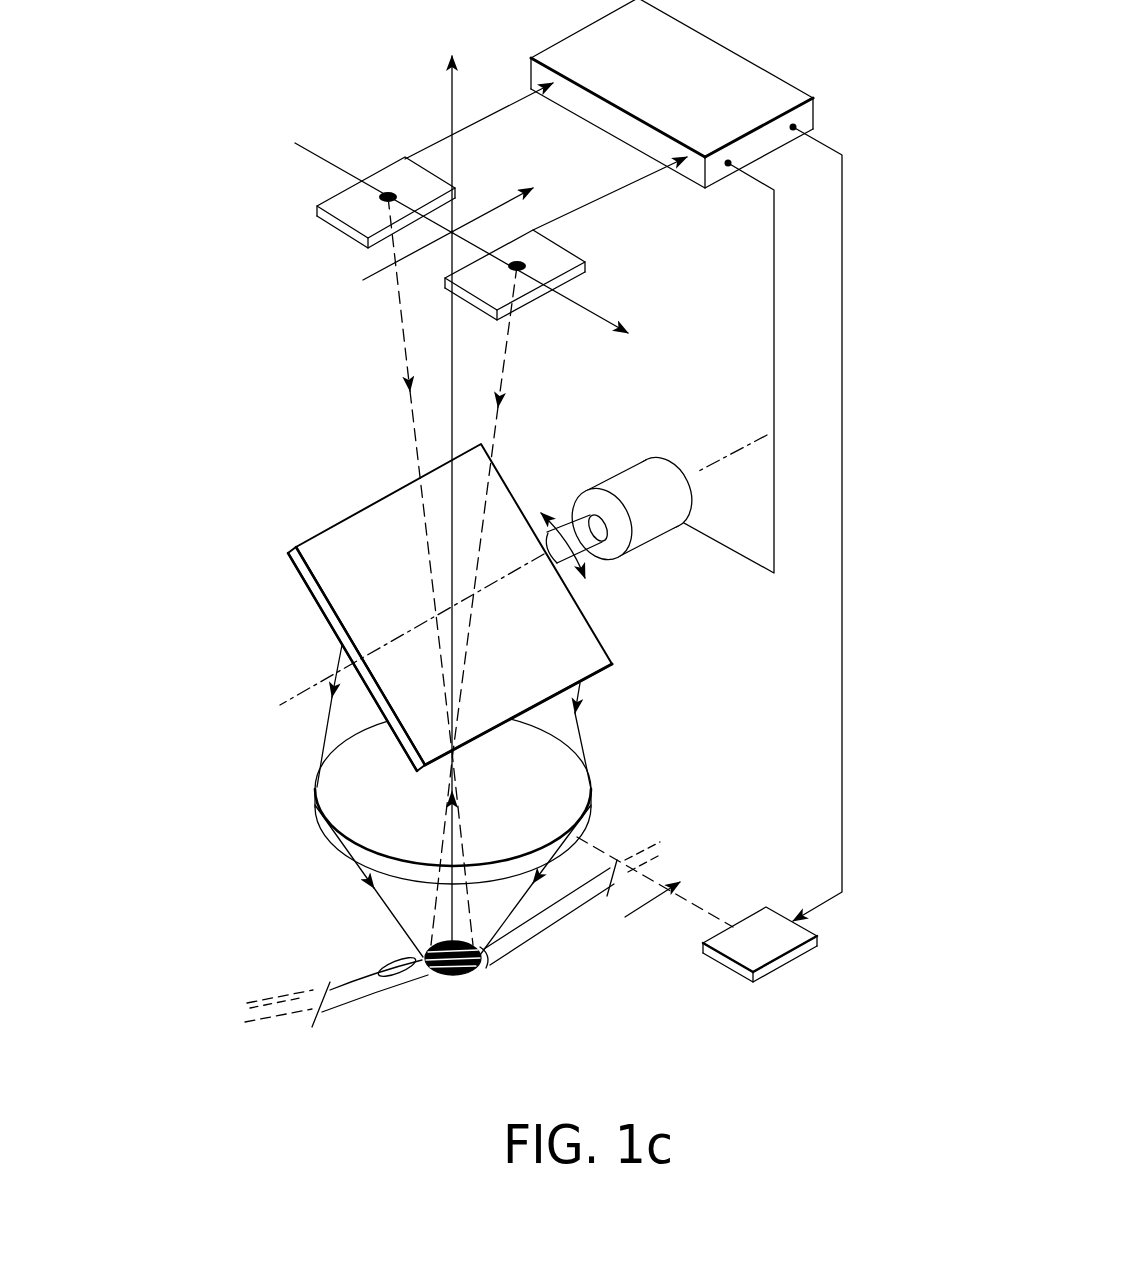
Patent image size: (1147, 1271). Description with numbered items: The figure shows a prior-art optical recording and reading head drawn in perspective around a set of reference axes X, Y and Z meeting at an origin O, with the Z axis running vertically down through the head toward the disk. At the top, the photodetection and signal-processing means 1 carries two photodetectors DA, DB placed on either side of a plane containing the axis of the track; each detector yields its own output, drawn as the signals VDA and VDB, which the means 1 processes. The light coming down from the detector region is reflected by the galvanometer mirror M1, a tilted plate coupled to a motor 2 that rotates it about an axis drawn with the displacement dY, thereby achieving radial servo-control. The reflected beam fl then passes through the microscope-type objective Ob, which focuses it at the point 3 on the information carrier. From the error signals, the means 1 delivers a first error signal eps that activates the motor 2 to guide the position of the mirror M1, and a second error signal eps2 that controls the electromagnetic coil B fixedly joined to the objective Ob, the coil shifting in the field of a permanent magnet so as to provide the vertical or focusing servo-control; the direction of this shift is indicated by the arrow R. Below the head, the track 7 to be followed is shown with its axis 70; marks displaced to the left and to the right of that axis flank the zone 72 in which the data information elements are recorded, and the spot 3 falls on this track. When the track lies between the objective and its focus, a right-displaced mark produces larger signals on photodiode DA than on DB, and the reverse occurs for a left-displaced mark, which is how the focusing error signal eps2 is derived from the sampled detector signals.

The photodetection and signal-processing means 1 is at (732, 50).
The motor 2 is at (627, 468).
The focus point 3 is at (438, 977).
The track 7 is at (262, 1004).
The axis of the track 70 is at (302, 1015).
The zone 72 is at (366, 996).
The electromagnetic coil B is at (782, 963).
The displacement direction R is at (653, 902).
The galvanometer mirror M1 is at (599, 634).
The objective Ob is at (316, 783).
The beam fl is at (584, 735).
The error signal eps is at (755, 560).
The focusing error signal eps2 is at (838, 893).
The displacement delta Y / rotation axis dY is at (765, 435).
The photodetector DA is at (388, 158).
The photodetector DB is at (528, 297).
The detector A signal VDA is at (481, 119).
The detector B signal VDB is at (606, 196).
The origin O is at (450, 236).
The X axis X is at (461, 238).
The Y axis Y is at (448, 223).
The Z axis Z is at (462, 498).